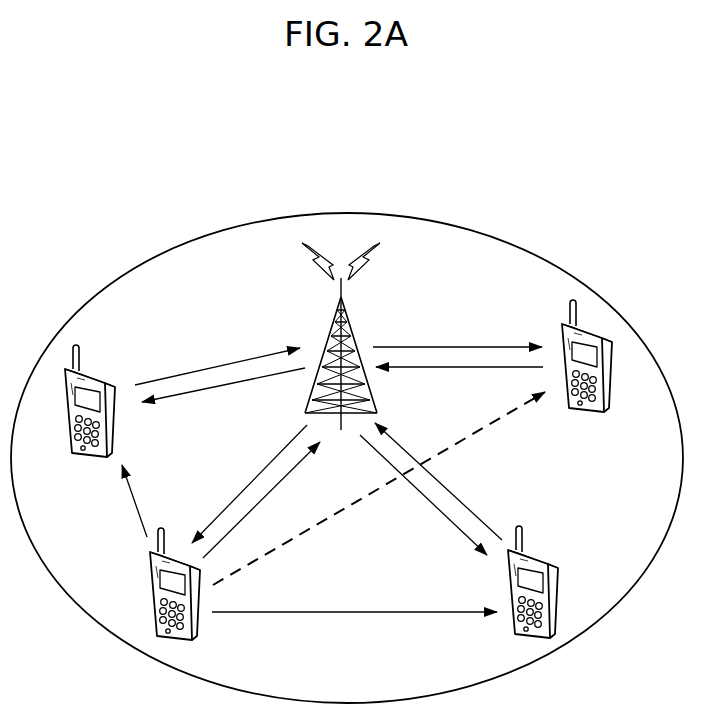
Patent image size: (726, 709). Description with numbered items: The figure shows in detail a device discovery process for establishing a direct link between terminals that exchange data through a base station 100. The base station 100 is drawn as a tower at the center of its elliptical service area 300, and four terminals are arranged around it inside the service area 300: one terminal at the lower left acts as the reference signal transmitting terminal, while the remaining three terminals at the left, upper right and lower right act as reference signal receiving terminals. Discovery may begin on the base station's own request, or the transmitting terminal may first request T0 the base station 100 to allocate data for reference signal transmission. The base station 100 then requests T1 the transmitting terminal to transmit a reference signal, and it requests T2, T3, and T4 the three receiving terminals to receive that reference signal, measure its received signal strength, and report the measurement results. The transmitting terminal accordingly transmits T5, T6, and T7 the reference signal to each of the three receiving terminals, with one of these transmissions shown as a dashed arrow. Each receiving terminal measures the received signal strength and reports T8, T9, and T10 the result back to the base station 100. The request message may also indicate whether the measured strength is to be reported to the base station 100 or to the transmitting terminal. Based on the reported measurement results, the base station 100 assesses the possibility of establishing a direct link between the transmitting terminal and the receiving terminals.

The base station 100 is at (344, 297).
The service area 300 is at (510, 240).
The discovery request T0 is at (261, 500).
The request to transmit reference signal T1 is at (249, 484).
The request to receive reference signal T2 is at (223, 391).
The request to receive reference signal T3 is at (457, 331).
The request to receive reference signal T4 is at (423, 495).
The reference signal transmission T5 is at (141, 501).
The reference signal transmission T6 is at (354, 597).
The reference signal transmission T7 is at (379, 488).
The measurement result report T8 is at (217, 361).
The measurement result report T9 is at (438, 481).
The measurement result report T10 is at (459, 381).